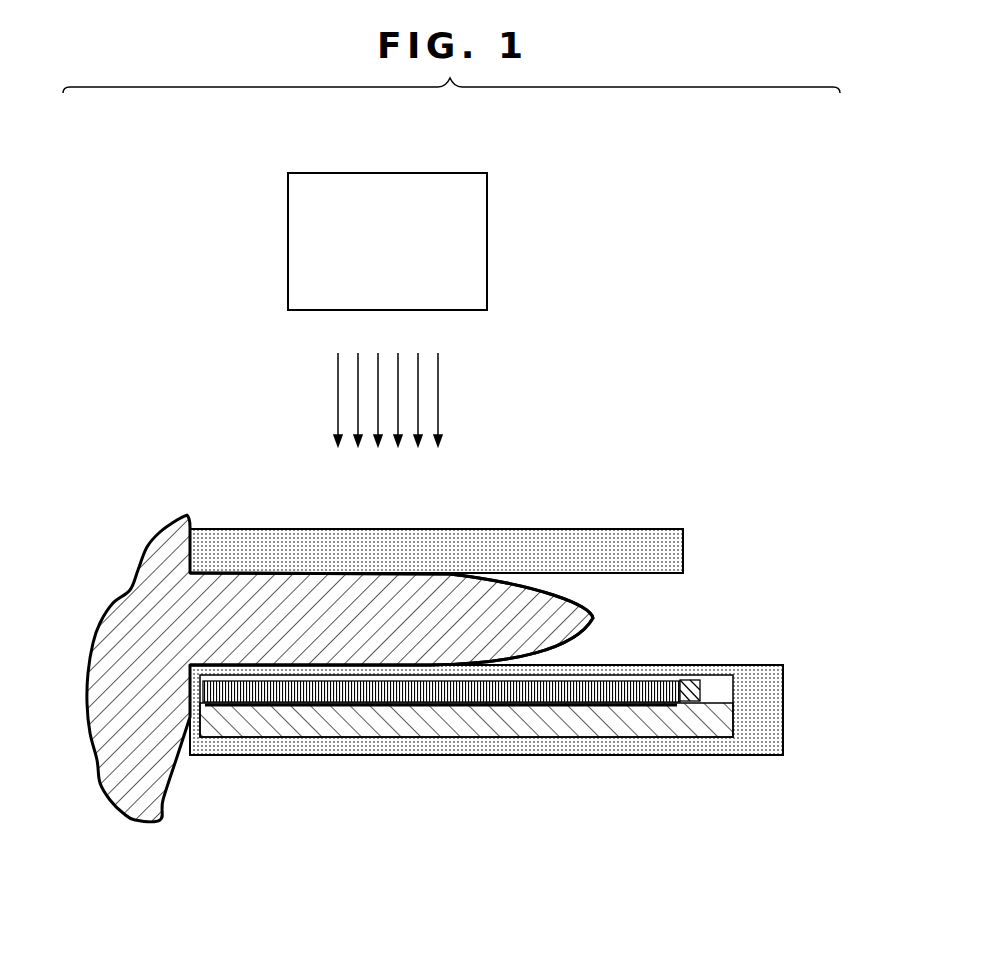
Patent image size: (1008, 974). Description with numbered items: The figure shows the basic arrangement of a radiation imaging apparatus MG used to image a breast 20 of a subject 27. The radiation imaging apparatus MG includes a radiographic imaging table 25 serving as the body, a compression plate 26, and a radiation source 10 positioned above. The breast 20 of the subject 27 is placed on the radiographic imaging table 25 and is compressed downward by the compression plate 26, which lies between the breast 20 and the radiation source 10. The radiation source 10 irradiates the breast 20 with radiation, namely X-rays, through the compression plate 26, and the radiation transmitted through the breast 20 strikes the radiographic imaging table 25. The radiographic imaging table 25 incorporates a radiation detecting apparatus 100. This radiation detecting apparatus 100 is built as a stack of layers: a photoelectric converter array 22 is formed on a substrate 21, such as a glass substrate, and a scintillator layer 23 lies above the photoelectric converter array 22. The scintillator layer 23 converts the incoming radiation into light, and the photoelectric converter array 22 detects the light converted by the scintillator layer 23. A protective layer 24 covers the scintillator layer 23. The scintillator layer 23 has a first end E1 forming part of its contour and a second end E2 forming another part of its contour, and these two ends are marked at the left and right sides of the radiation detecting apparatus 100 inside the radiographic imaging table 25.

The radiation source 10 is at (487, 238).
The breast 20 is at (593, 618).
The substrate 21 is at (510, 717).
The photoelectric converter array 22 is at (440, 705).
The scintillator layer 23 is at (350, 700).
The protective layer 24 is at (688, 680).
The radiographic imaging table 25 is at (778, 705).
The compression plate 26 is at (580, 530).
The subject 27 is at (192, 522).
The radiation detecting apparatus 100 is at (534, 721).
The first end E1 is at (208, 772).
The second end E2 is at (682, 772).
The radiation imaging apparatus MG is at (443, 943).